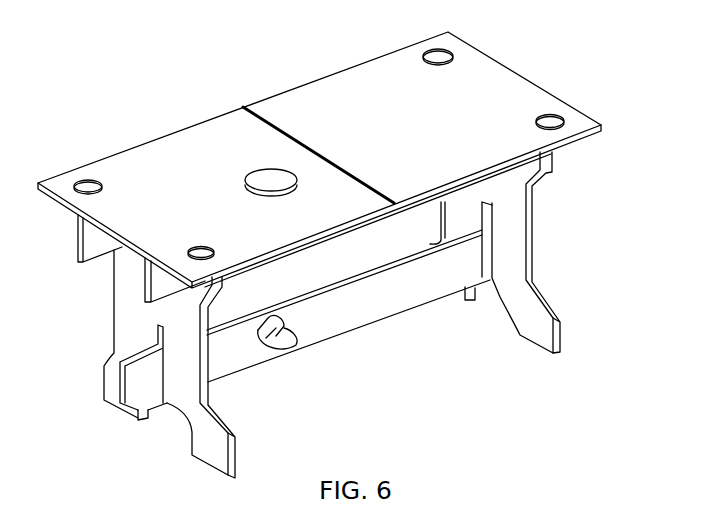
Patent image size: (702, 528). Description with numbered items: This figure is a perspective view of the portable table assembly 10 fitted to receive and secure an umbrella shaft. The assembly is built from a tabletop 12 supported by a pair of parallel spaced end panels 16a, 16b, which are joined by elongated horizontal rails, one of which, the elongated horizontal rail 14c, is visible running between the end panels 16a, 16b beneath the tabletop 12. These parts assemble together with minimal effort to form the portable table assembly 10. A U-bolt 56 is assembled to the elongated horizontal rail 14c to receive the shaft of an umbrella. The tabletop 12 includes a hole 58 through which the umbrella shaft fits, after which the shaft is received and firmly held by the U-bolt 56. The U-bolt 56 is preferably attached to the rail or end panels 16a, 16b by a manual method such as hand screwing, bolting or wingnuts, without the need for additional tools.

The portable table assembly 10 is at (113, 122).
The tabletop 12 is at (524, 78).
The elongated horizontal rail 14c is at (447, 296).
The end panel 16a is at (116, 313).
The end panel 16b is at (537, 228).
The U-bolt 56 is at (298, 330).
The hole 58 is at (247, 186).